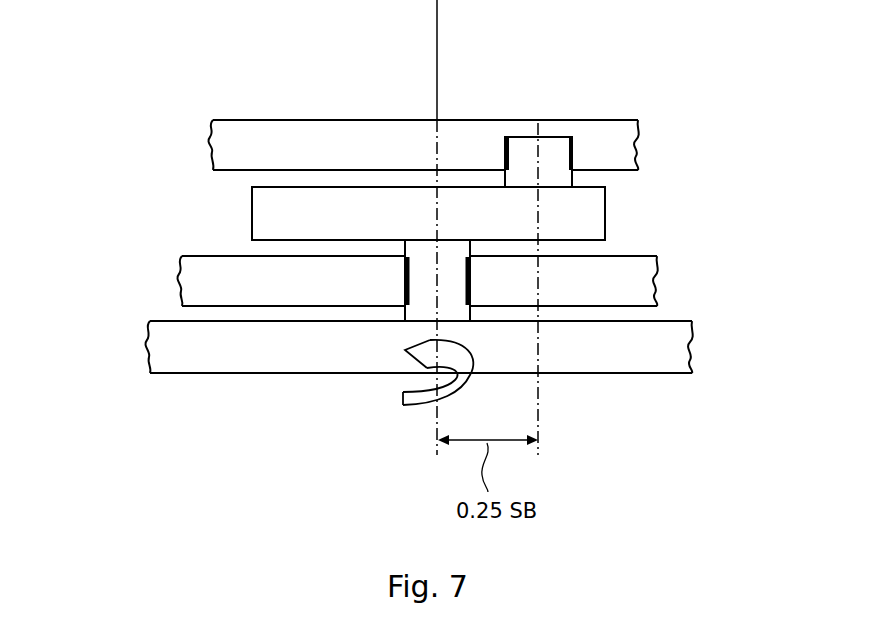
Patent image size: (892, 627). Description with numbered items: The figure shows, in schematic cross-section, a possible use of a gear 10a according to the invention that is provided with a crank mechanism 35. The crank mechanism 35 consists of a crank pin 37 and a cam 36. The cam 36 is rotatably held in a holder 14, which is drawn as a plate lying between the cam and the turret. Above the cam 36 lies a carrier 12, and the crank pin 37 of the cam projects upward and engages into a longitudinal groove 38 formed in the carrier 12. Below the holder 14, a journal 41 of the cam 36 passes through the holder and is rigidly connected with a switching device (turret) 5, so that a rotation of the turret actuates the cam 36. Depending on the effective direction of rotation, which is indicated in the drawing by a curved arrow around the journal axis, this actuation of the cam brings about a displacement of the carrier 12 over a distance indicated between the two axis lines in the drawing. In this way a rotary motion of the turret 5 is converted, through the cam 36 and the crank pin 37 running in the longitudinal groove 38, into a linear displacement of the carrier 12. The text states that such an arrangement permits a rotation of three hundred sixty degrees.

The carrier 12 is at (260, 148).
The crank mechanism 35 is at (392, 184).
The cam 36 is at (577, 213).
The crank pin 37 is at (523, 167).
The longitudinal groove 38 is at (573, 163).
The holder 14 is at (613, 288).
The gear 10a is at (159, 292).
The journal 41 is at (418, 298).
The switching device (turret) 5 is at (652, 344).